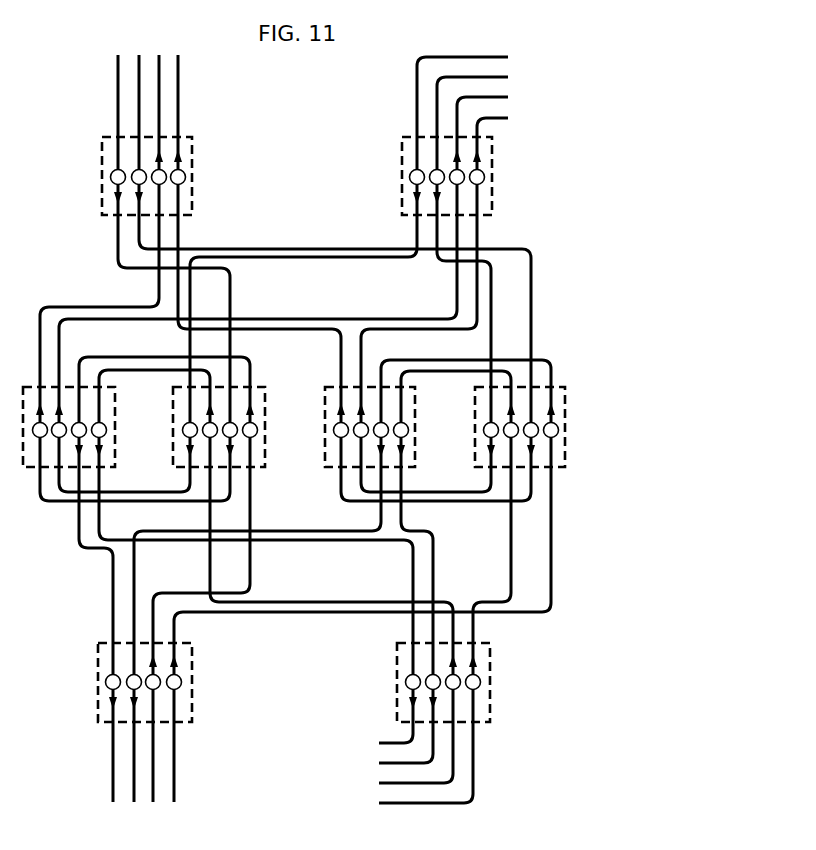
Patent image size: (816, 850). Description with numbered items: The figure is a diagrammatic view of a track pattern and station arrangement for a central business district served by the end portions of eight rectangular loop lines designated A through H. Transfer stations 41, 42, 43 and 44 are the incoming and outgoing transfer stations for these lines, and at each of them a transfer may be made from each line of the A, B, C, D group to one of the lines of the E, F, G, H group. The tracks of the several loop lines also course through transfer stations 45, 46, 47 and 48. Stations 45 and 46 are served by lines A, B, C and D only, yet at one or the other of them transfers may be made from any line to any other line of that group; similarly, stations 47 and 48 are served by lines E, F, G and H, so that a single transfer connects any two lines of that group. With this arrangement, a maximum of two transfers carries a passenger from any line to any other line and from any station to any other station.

The transfer station 41 is at (192, 172).
The transfer station 42 is at (492, 172).
The transfer station 43 is at (192, 677).
The transfer station 44 is at (490, 677).
The transfer station 45 is at (135, 413).
The transfer station 46 is at (285, 413).
The transfer station 47 is at (435, 413).
The transfer station 48 is at (585, 413).